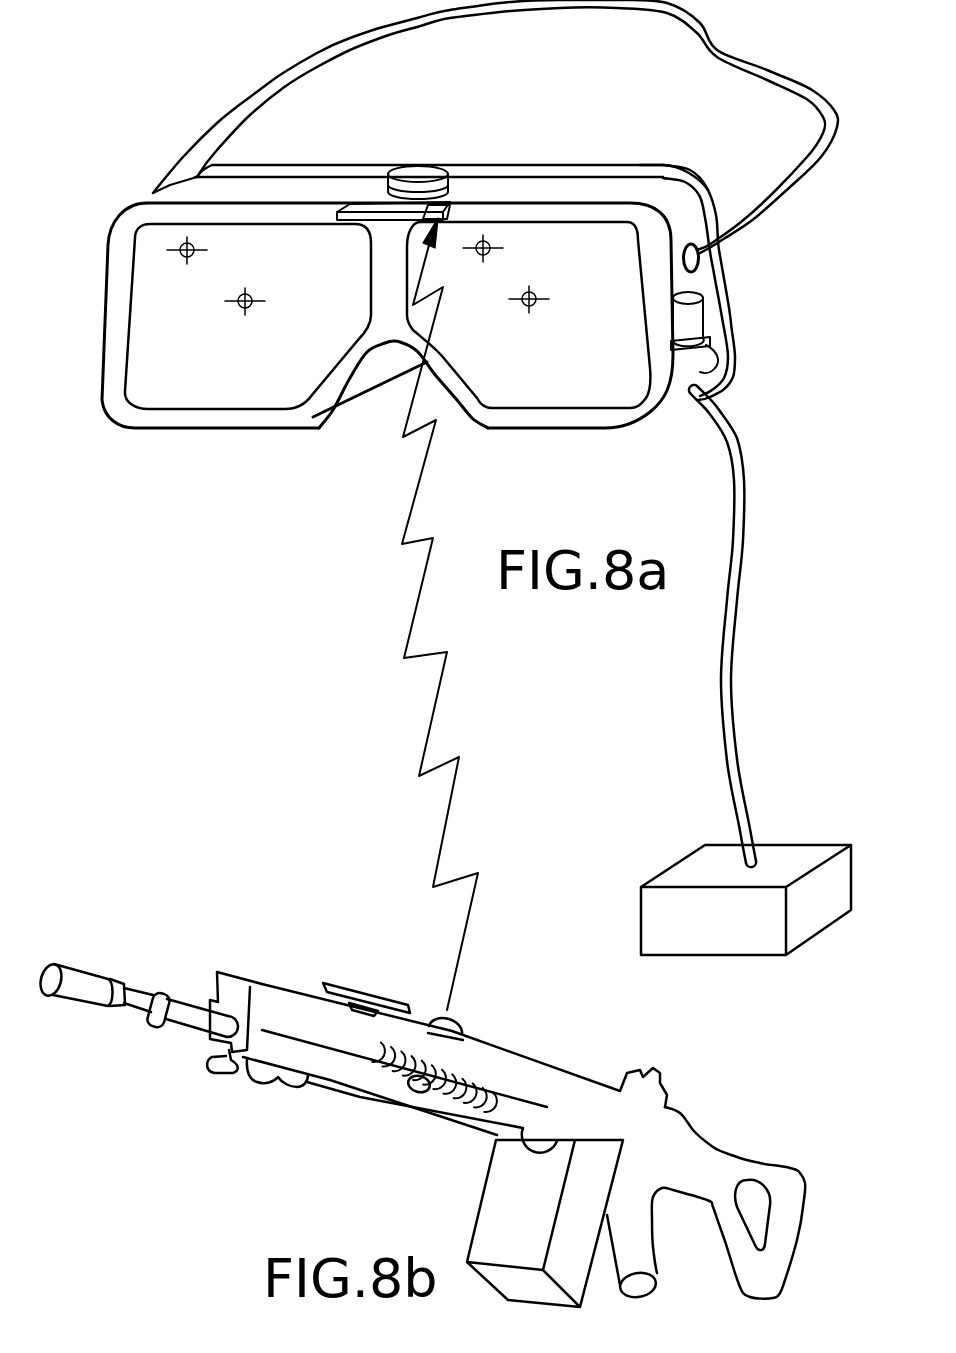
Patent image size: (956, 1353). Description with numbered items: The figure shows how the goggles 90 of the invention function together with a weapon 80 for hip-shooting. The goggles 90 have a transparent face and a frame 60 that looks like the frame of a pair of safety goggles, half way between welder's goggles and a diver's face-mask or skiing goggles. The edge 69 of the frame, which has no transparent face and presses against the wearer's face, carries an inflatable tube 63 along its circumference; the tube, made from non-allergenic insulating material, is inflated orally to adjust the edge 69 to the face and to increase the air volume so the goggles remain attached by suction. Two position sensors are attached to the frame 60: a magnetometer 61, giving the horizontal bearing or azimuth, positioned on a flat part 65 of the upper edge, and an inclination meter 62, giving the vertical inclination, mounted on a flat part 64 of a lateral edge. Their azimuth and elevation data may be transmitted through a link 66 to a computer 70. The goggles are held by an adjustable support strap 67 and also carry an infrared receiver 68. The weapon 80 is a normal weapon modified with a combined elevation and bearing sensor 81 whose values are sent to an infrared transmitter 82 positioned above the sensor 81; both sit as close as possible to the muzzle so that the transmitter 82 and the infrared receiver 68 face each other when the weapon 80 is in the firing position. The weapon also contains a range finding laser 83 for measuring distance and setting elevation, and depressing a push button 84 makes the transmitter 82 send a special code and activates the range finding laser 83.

In FIG. 8A, the frame 60 is at (133, 418).
In FIG. 8A, the magnetometer 61 is at (436, 175).
In FIG. 8A, the inclination meter 62 is at (694, 317).
In FIG. 8A, the inflatable tube 63 is at (722, 283).
In FIG. 8A, the flat part of lateral edge 64 is at (718, 363).
In FIG. 8A, the flat part of upper edge 65 is at (385, 192).
In FIG. 8A, the link 66 is at (745, 511).
In FIG. 8A, the adjustable support strap 67 is at (797, 88).
In FIG. 8A, the infrared receiver 68 is at (362, 207).
In FIG. 8A, the edge of the frame 69 is at (662, 168).
In FIG. 8A, the computer 70 is at (789, 859).
In FIG. 8A, the goggles 90 is at (94, 282).
In FIG. 8B, the weapon 80 is at (373, 1108).
In FIG. 8B, the combined elevation and bearing sensor 81 is at (457, 1038).
In FIG. 8B, the infrared transmitter 82 is at (457, 1022).
In FIG. 8B, the range finding laser 83 is at (366, 995).
In FIG. 8B, the push button 84 is at (419, 1092).